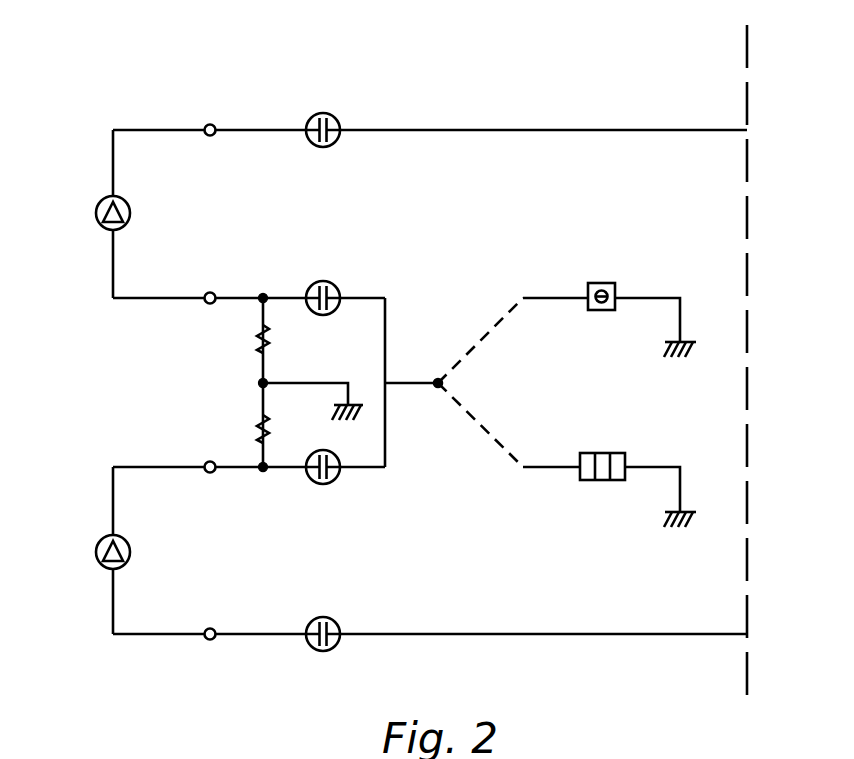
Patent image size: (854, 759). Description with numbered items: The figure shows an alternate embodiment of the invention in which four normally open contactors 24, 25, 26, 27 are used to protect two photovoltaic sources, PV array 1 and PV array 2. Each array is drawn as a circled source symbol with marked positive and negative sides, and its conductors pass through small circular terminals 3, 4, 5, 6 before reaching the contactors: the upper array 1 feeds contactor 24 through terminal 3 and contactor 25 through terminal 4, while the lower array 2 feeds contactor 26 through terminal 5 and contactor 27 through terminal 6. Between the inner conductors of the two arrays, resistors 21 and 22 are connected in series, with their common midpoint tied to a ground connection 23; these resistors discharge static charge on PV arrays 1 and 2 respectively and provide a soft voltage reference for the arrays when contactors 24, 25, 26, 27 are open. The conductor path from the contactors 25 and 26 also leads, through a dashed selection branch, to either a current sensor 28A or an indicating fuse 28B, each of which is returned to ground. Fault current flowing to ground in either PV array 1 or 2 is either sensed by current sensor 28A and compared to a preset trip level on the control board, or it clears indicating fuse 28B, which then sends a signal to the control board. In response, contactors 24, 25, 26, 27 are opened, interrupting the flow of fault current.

The PV array 1 is at (104, 214).
The PV array 2 is at (104, 552).
The first terminal 3 is at (210, 114).
The second terminal 4 is at (210, 283).
The third terminal 5 is at (210, 452).
The fourth terminal 6 is at (210, 618).
The resistor 21 is at (246, 341).
The resistor 22 is at (247, 429).
The ground connection 23 is at (352, 441).
The normally open contactor 24 is at (323, 116).
The normally open contactor 25 is at (323, 284).
The normally open contactor 26 is at (323, 483).
The normally open contactor 27 is at (323, 651).
The current sensor 28A is at (609, 306).
The indicating fuse 28B is at (609, 476).